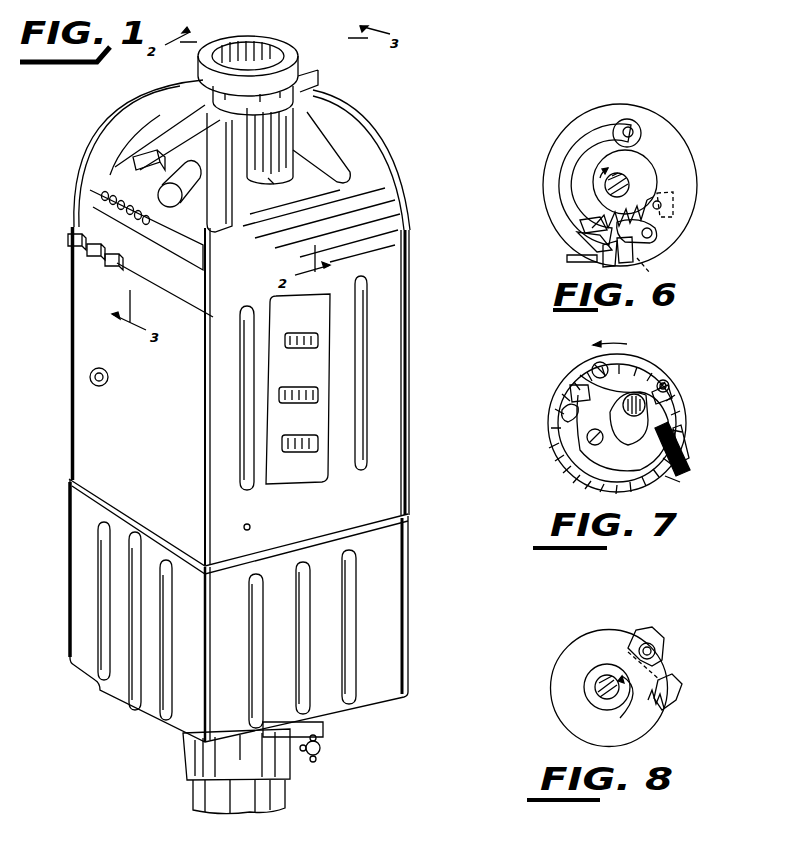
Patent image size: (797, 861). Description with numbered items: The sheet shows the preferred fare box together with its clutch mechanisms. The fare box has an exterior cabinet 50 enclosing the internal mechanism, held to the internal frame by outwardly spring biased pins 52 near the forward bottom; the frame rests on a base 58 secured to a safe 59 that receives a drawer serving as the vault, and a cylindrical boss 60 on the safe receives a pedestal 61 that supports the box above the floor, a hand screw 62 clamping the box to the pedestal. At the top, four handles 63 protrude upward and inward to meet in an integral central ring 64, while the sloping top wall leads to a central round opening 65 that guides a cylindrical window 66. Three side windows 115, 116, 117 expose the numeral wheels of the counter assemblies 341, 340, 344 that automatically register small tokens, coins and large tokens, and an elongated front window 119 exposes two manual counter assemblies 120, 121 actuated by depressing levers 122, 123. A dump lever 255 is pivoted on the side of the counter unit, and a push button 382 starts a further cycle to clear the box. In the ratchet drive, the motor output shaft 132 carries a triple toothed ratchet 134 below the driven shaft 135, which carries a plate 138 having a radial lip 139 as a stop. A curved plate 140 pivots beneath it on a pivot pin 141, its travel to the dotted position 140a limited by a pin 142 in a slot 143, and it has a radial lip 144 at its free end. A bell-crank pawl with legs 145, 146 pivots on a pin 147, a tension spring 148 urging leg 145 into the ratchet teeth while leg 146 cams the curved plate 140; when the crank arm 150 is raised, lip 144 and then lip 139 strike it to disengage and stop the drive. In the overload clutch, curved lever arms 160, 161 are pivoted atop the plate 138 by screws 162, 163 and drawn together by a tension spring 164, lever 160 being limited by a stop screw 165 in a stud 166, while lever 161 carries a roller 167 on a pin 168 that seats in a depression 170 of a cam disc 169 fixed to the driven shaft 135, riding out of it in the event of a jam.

In FIG. 1, the exterior cabinet 50 is at (410, 262).
In FIG. 1, the spring biased pin 52 is at (248, 524).
In FIG. 1, the base 58 is at (407, 512).
In FIG. 1, the safe 59 is at (70, 575).
In FIG. 1, the cylindrical boss 60 is at (283, 780).
In FIG. 1, the pedestal 61 is at (285, 808).
In FIG. 1, the hand screw 62 is at (321, 746).
In FIG. 1, the handle 63 is at (160, 95).
In FIG. 1, the central ring 64 is at (316, 96).
In FIG. 1, the central round opening 65 is at (272, 172).
In FIG. 1, the cylindrical window 66 is at (286, 138).
In FIG. 1, the window 115 is at (312, 332).
In FIG. 1, the window 116 is at (314, 386).
In FIG. 1, the window 117 is at (316, 444).
In FIG. 1, the elongated window 119 is at (108, 186).
In FIG. 1, the counter assembly 120 is at (98, 202).
In FIG. 1, the counter assembly 121 is at (140, 227).
In FIG. 1, the lever 122 is at (89, 256).
In FIG. 1, the lever 123 is at (107, 266).
In FIG. 6, the output shaft 132 is at (627, 172).
In FIG. 6, the ratchet 134 is at (643, 195).
In FIG. 7, the driven shaft 135 is at (635, 392).
In FIG. 8, the driven shaft 135 is at (597, 682).
In FIG. 6, the plate 138 is at (653, 118).
In FIG. 7, the plate 138 is at (558, 437).
In FIG. 6, the radial lip 139 is at (621, 262).
In FIG. 7, the radial lip 139 is at (684, 458).
In FIG. 6, the curved plate 140 is at (566, 180).
In FIG. 6, the dotted line position 140a is at (640, 262).
In FIG. 6, the pivot pin 141 is at (626, 126).
In FIG. 6, the pin 142 is at (580, 226).
In FIG. 6, the slot 143 is at (583, 240).
In FIG. 6, the radial lip 144 is at (604, 262).
In FIG. 6, the pawl leg 145 is at (650, 200).
In FIG. 6, the pawl leg 146 is at (652, 244).
In FIG. 6, the pin 147 is at (660, 240).
In FIG. 6, the tension spring 148 is at (673, 220).
In FIG. 6, the crank arm 150 is at (566, 259).
In FIG. 7, the curved lever arm 160 is at (575, 468).
In FIG. 7, the curved lever arm 161 is at (668, 406).
In FIG. 7, the screw 162 is at (590, 368).
In FIG. 7, the screw 163 is at (585, 440).
In FIG. 7, the tension spring 164 is at (680, 470).
In FIG. 8, the tension spring 164 is at (670, 704).
In FIG. 7, the stop screw 165 is at (560, 414).
In FIG. 7, the stud 166 is at (570, 392).
In FIG. 7, the roller 167 is at (673, 395).
In FIG. 8, the roller 167 is at (656, 642).
In FIG. 7, the pin 168 is at (665, 380).
In FIG. 8, the pin 168 is at (647, 643).
In FIG. 8, the cam disc 169 is at (588, 640).
In FIG. 8, the depression 170 is at (662, 666).
In FIG. 1, the dump lever 255 is at (66, 238).
In FIG. 1, the counter assembly 340 is at (314, 400).
In FIG. 1, the counter assembly 341 is at (287, 340).
In FIG. 1, the counter assembly 344 is at (300, 452).
In FIG. 1, the push button 382 is at (99, 368).